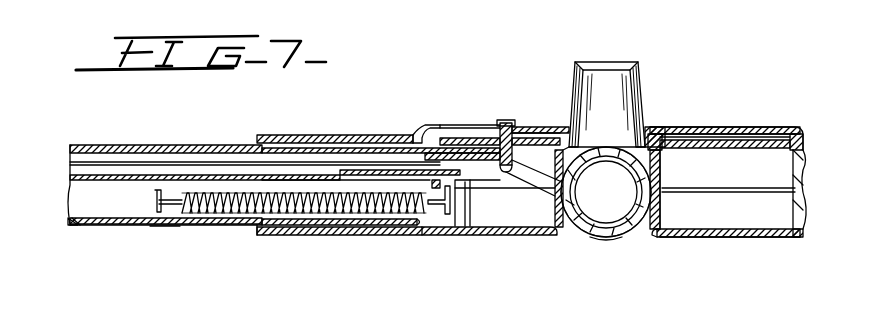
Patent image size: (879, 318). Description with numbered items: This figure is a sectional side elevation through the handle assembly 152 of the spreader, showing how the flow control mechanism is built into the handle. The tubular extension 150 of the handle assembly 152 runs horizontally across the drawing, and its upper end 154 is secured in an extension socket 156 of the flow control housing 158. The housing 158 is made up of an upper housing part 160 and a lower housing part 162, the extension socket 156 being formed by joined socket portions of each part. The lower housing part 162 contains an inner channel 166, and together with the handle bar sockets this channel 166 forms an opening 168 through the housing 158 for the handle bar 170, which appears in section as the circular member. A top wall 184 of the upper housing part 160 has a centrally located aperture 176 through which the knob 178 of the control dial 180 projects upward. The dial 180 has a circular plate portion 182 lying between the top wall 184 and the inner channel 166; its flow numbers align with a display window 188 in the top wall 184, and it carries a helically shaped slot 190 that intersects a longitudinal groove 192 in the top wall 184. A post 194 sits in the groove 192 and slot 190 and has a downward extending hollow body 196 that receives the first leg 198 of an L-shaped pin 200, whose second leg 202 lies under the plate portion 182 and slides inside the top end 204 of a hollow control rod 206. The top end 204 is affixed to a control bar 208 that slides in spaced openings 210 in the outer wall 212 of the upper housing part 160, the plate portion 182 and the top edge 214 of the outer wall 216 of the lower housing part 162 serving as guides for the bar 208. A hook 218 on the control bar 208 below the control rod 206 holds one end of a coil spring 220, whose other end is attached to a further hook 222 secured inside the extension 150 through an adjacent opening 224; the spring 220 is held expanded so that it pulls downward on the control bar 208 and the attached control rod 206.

The tubular extension 150 is at (70, 225).
The handle assembly 152 is at (162, 259).
The upper end 154 is at (426, 233).
The extension socket 156 is at (258, 234).
The flow control housing 158 is at (731, 127).
The upper housing part 160 is at (804, 160).
The lower housing part 162 is at (700, 238).
The inner channel 166 is at (661, 178).
The opening 168 is at (668, 132).
The handle bar 170 is at (606, 240).
The aperture 176 is at (648, 133).
The knob 178 is at (577, 90).
The control dial 180 is at (512, 127).
The circular plate portion 182 is at (690, 135).
The top wall 184 is at (780, 133).
The display window 188 is at (418, 128).
The helically shaped slot 190 is at (468, 157).
The longitudinal groove 192 is at (532, 130).
The post 194 is at (504, 120).
The hollow body 196 is at (576, 198).
The first leg 198 is at (570, 170).
The L-shaped pin 200 is at (484, 172).
The second leg 202 is at (347, 150).
The top end 204 is at (356, 227).
The hollow control rod 206 is at (135, 150).
The control bar 208 is at (462, 190).
The spaced openings 210 is at (458, 160).
The outer wall 212 is at (797, 174).
The top edge 214 is at (522, 182).
The outer wall 216 is at (801, 230).
The hook 218 is at (446, 214).
The coil spring 220 is at (218, 192).
The further hook 222 is at (155, 198).
The opening 224 is at (80, 227).